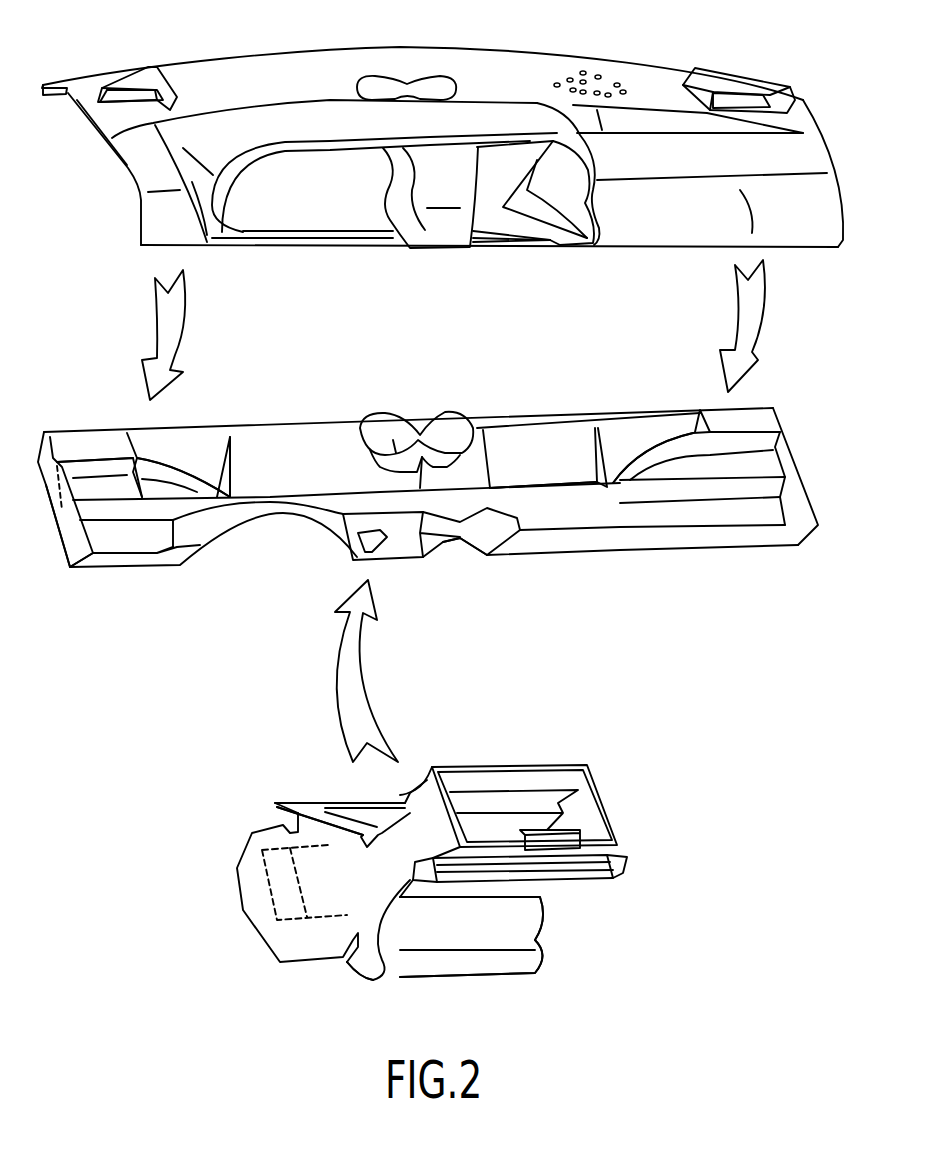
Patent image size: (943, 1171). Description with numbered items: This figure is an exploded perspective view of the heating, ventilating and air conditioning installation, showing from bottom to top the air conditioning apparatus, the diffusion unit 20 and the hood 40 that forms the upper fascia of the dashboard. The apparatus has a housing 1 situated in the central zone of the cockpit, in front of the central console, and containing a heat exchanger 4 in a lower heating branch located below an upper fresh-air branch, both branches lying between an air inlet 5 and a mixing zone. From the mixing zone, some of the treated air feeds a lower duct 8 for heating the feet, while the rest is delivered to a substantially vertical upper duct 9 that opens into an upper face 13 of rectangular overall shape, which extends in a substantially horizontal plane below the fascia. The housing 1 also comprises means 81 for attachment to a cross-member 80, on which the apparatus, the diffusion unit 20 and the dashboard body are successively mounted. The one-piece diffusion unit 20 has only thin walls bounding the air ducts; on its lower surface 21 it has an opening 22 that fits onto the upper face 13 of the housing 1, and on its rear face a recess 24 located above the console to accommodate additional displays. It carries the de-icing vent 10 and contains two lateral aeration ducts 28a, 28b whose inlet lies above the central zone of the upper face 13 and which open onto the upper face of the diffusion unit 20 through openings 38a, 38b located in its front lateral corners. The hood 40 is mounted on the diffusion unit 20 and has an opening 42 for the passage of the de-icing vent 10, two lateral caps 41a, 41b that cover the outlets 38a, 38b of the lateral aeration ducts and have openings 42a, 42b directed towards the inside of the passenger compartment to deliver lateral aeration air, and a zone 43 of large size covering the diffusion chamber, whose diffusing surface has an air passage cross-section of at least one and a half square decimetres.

The housing 1 is at (250, 965).
The heat exchanger 4 is at (275, 875).
The inlet 5 is at (355, 805).
The lower duct 8 is at (368, 975).
The upper duct 9 is at (520, 895).
The de-icing vent 10 is at (445, 427).
The upper face 13 is at (595, 785).
The diffusion unit 20 is at (270, 553).
The lower surface 21 is at (68, 573).
The opening 22 is at (405, 530).
The recess 24 is at (460, 545).
The lateral aeration duct 28a is at (597, 450).
The lateral aeration duct 28b is at (190, 447).
The opening 38a is at (750, 415).
The opening 38b is at (103, 447).
The hood 40 is at (245, 72).
The lateral cap 41a is at (733, 82).
The lateral cap 41b is at (132, 82).
The opening 42 is at (402, 82).
The opening 42a is at (125, 94).
The opening 42b is at (748, 100).
The zone of large size 43 is at (565, 80).
The cross-member 80 is at (617, 868).
The means for attachment 81 is at (585, 878).